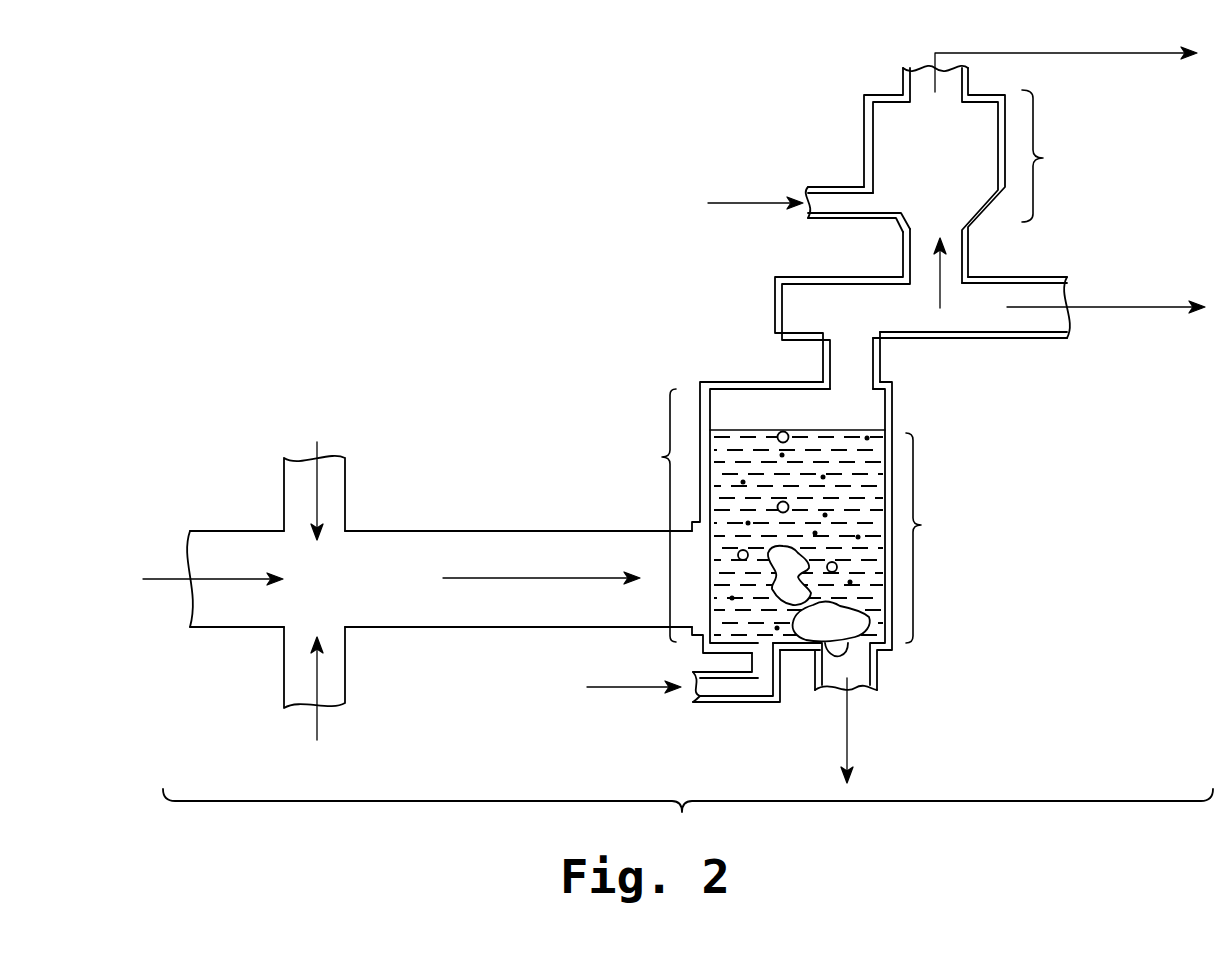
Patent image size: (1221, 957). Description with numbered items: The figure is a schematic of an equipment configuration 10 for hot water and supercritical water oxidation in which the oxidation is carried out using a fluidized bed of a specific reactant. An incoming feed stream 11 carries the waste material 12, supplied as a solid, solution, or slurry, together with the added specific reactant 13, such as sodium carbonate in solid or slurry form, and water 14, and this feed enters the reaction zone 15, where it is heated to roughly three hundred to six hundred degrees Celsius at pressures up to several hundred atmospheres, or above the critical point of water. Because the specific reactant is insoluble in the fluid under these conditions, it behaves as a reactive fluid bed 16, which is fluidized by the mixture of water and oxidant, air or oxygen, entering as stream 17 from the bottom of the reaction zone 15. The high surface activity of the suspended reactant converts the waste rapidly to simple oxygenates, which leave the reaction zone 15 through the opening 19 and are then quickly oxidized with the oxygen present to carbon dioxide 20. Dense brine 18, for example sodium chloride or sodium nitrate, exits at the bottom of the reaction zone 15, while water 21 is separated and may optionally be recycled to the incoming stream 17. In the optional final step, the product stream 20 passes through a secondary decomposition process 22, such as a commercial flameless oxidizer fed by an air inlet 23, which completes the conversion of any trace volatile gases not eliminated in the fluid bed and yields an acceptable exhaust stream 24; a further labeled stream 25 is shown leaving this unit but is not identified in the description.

The equipment configuration 10 is at (688, 817).
The incoming feed stream 11 is at (226, 578).
The waste material 12 is at (315, 498).
The specific reactant 13 is at (315, 687).
The water 14 is at (753, 536).
The reaction zone 15 is at (858, 537).
The reactive fluid bed 16 is at (839, 536).
The water and oxidant stream 17 is at (789, 437).
The dense brine 18 is at (620, 688).
The opening 19 is at (845, 375).
The carbon dioxide product stream 20 is at (848, 645).
The water 21 is at (1120, 307).
The secondary decomposition process 22 is at (940, 290).
The air inlet 23 is at (973, 174).
The exhaust stream 24 is at (735, 203).
The off-gas outlet 25 is at (1113, 55).